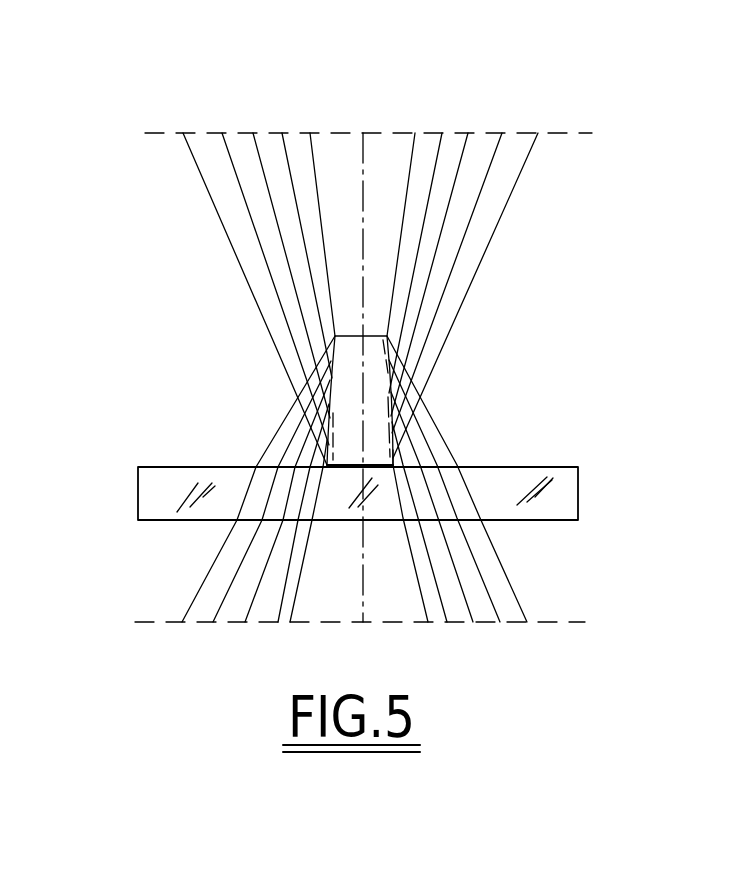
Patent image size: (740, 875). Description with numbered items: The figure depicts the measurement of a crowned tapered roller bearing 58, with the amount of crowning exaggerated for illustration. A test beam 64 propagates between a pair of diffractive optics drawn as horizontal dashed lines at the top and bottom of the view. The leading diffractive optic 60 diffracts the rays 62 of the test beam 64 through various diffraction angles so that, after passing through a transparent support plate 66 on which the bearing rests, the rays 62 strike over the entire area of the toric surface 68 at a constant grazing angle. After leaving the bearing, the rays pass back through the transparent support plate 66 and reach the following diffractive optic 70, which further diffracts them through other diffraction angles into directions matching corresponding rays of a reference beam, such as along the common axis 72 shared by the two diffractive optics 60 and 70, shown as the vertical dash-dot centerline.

The crowned tapered roller bearing 58 is at (383, 385).
The leading diffractive optic 60 is at (165, 622).
The rays 62 is at (241, 268).
The test beam 64 is at (478, 272).
The transparent support plate 66 is at (148, 467).
The toric surface 68 is at (325, 380).
The following diffractive optic 70 is at (172, 133).
The common axis 72 is at (363, 152).